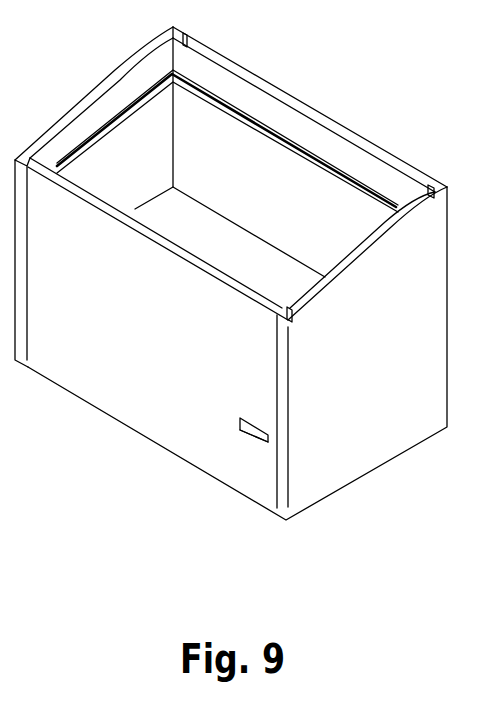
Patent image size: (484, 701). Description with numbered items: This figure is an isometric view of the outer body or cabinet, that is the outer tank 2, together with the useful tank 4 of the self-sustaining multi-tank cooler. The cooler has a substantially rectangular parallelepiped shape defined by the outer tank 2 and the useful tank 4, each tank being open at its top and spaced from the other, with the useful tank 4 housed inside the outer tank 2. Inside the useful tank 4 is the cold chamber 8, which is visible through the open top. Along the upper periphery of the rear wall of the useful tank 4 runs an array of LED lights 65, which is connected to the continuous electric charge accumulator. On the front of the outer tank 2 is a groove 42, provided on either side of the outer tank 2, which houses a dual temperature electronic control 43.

The outer tank 2 is at (133, 352).
The useful tank 4 is at (230, 148).
The cold chamber 8 is at (218, 238).
The groove 42 is at (257, 435).
The dual temperature electronic control 43 is at (257, 437).
The array of LED lights 65 is at (302, 145).